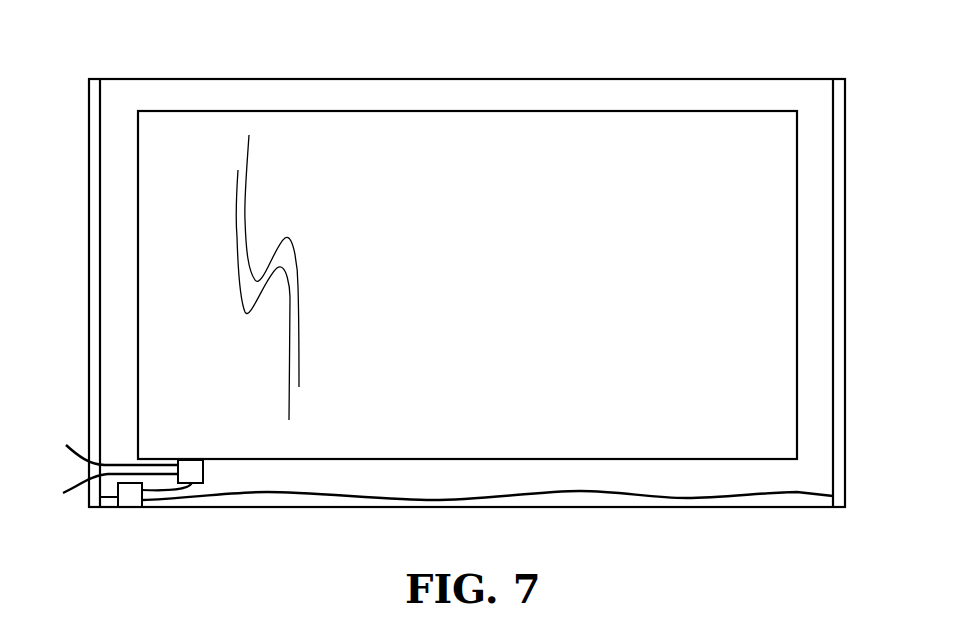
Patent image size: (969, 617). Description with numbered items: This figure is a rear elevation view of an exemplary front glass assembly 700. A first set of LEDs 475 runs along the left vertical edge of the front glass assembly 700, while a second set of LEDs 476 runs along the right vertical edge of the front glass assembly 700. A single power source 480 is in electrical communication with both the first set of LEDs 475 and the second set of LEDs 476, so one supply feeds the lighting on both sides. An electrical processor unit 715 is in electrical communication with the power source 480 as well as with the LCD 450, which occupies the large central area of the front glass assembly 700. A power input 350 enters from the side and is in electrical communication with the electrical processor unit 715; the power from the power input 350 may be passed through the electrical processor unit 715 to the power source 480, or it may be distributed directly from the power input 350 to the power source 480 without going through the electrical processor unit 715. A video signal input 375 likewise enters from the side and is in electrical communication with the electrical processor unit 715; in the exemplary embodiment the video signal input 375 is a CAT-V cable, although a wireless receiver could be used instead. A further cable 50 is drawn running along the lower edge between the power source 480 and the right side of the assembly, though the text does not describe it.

The front glass assembly 700 is at (467, 257).
The first set of LEDs 475 is at (96, 93).
The second set of LEDs 476 is at (841, 92).
The LCD 450 is at (327, 435).
The electrical processor unit 715 is at (201, 484).
The power source 480 is at (128, 497).
The power input 350 is at (56, 436).
The video signal input 375 is at (56, 504).
The cable 50 is at (818, 423).